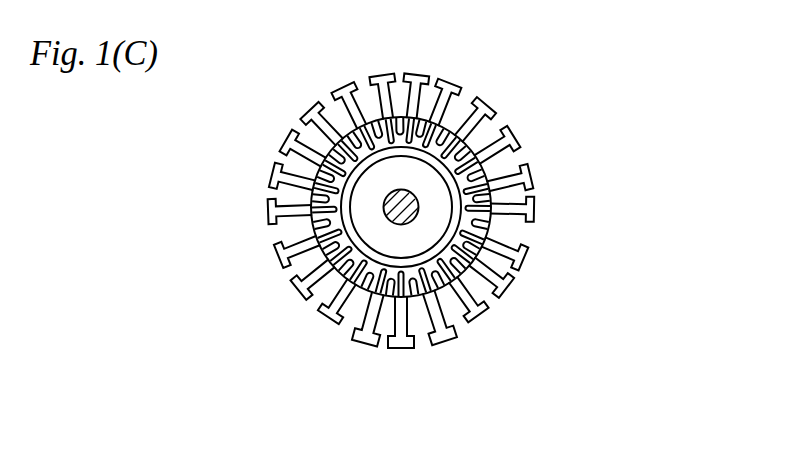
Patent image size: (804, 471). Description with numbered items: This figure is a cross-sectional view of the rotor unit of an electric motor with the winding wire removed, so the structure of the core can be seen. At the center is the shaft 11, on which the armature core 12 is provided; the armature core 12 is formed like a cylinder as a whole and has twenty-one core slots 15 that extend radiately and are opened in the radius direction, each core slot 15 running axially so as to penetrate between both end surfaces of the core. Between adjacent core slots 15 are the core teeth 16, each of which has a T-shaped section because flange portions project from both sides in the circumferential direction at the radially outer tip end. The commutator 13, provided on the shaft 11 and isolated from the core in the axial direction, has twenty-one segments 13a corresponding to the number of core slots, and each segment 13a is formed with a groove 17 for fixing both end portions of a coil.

The shaft 11 is at (406, 211).
The armature core 12 is at (413, 244).
The commutator 13 is at (453, 142).
The segment 13a is at (462, 179).
The core slot 15 is at (452, 308).
The core tooth 16 is at (332, 315).
The groove 17 is at (277, 240).